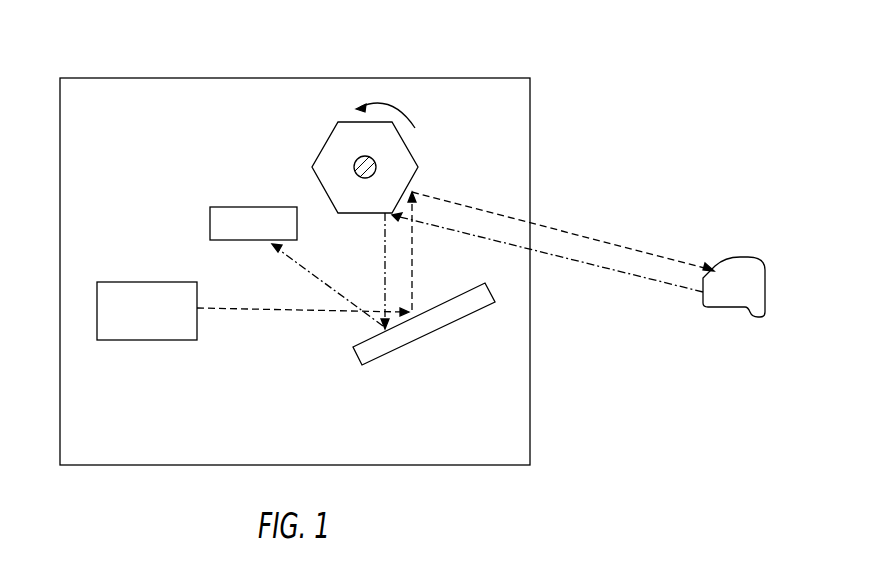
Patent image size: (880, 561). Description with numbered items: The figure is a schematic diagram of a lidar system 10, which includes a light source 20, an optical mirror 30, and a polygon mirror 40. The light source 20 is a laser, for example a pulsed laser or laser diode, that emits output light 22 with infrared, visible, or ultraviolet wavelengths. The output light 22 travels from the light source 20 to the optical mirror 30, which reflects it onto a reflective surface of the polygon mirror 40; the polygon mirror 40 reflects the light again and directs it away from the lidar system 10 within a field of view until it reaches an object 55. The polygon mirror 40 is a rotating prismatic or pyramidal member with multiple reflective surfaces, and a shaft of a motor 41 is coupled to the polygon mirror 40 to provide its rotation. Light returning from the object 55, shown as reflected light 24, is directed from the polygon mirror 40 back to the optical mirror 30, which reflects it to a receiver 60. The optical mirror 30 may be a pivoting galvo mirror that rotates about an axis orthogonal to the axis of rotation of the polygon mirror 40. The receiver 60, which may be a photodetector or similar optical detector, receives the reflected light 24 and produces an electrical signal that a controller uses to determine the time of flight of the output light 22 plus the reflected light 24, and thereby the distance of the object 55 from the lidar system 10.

The lidar system 10 is at (425, 62).
The light source 20 is at (122, 283).
The output light 22 is at (262, 312).
The reflected light 24 is at (330, 287).
The optical mirror 30 is at (440, 330).
The polygon mirror 40 is at (343, 122).
The motor 41 is at (377, 167).
The object 55 is at (740, 258).
The receiver 60 is at (240, 207).